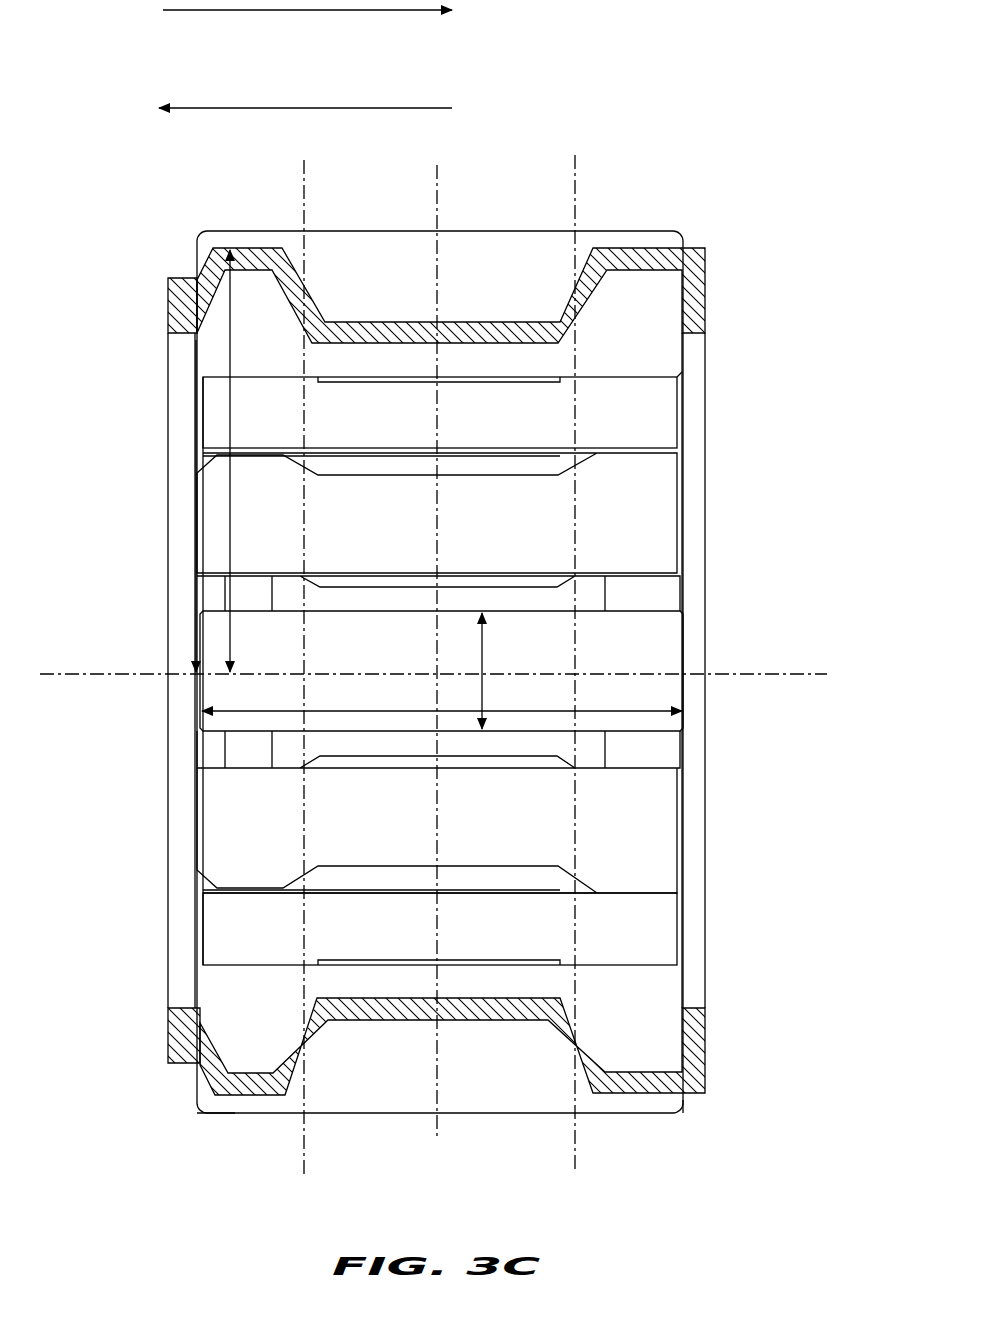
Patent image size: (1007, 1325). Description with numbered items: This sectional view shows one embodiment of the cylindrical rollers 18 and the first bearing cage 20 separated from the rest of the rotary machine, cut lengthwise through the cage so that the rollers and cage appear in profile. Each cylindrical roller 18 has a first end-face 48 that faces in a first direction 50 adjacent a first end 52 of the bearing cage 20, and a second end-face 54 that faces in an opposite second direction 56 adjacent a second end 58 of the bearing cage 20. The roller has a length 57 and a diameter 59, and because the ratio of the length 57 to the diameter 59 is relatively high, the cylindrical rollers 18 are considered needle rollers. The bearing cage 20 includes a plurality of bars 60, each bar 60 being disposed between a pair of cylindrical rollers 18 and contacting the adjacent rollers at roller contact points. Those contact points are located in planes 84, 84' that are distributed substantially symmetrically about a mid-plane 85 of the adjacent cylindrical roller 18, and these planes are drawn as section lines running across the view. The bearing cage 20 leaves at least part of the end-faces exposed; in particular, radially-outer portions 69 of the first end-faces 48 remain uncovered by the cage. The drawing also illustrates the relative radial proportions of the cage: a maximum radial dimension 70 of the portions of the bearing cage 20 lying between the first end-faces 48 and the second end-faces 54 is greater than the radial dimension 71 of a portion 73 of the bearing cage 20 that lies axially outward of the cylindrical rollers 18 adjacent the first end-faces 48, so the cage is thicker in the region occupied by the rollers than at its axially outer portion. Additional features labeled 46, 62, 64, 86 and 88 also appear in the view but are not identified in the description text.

The cylindrical rollers 18 is at (645, 500).
The first bearing cage 20 is at (695, 282).
The longitudinal axis 46 is at (98, 677).
The first end-face 48 is at (197, 258).
The first direction 50 is at (276, 110).
The first end 52 is at (180, 1118).
The second end-face 54 is at (682, 328).
The second direction 56 is at (282, 12).
The length 57 is at (522, 712).
The second end 58 is at (704, 1118).
The diameter 59 is at (490, 648).
The bar 60 is at (500, 322).
The outer sleeve 62 is at (173, 417).
The outer wall 64 is at (698, 390).
The radially-outer portion of first end-face 69 is at (197, 272).
The maximum radial dimension 70 is at (197, 433).
The radial dimension 71 is at (197, 642).
The portion of bearing cage 73 is at (192, 286).
The plane 84 is at (602, 656).
The plane 84' is at (334, 658).
The mid-plane 85 is at (436, 230).
The sloped surface 86 is at (257, 248).
The top surface 88 is at (267, 248).